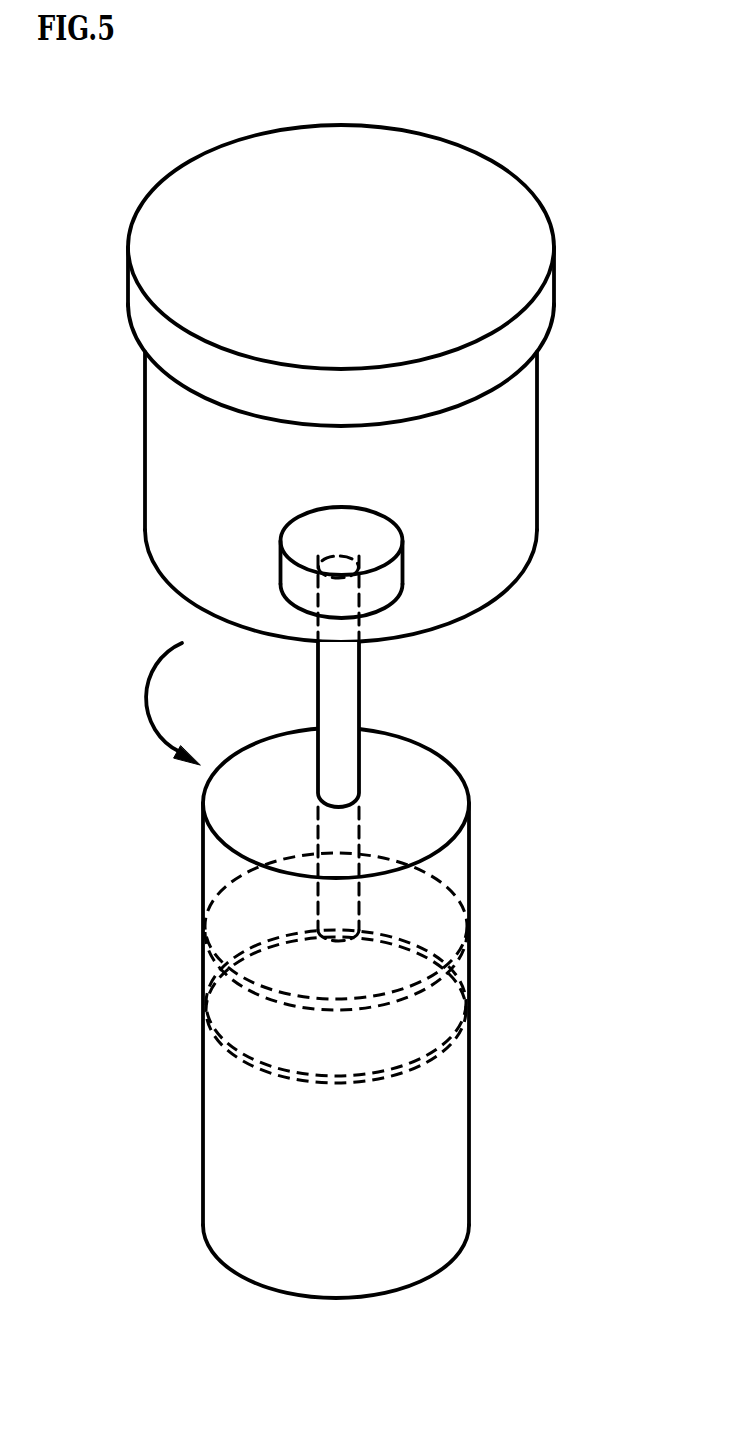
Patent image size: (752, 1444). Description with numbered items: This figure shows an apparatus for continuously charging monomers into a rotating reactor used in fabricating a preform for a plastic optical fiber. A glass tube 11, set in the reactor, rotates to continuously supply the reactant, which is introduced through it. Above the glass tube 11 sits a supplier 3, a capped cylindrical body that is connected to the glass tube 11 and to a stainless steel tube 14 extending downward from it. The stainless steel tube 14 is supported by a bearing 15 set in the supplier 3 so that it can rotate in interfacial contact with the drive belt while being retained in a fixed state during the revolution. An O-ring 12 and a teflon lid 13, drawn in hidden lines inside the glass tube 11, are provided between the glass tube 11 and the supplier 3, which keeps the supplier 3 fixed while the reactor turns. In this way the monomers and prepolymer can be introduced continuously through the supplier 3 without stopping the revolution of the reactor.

The supplier 3 is at (537, 430).
The glass tube 11 is at (469, 1215).
The O-ring 12 is at (469, 1017).
The teflon lid 13 is at (469, 928).
The stainless steel tube 14 is at (360, 684).
The bearing 15 is at (282, 548).